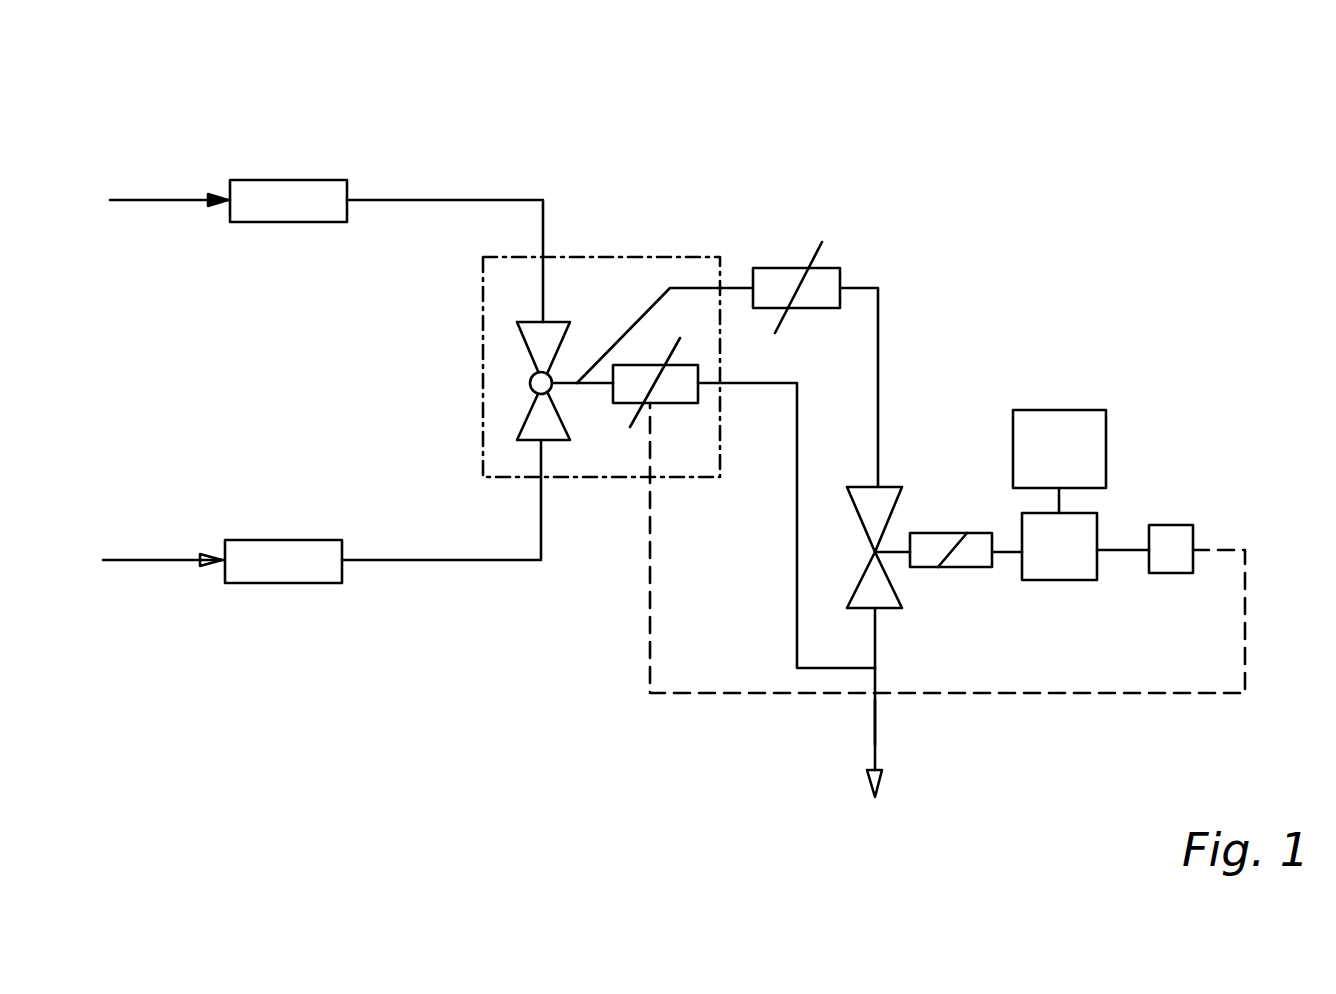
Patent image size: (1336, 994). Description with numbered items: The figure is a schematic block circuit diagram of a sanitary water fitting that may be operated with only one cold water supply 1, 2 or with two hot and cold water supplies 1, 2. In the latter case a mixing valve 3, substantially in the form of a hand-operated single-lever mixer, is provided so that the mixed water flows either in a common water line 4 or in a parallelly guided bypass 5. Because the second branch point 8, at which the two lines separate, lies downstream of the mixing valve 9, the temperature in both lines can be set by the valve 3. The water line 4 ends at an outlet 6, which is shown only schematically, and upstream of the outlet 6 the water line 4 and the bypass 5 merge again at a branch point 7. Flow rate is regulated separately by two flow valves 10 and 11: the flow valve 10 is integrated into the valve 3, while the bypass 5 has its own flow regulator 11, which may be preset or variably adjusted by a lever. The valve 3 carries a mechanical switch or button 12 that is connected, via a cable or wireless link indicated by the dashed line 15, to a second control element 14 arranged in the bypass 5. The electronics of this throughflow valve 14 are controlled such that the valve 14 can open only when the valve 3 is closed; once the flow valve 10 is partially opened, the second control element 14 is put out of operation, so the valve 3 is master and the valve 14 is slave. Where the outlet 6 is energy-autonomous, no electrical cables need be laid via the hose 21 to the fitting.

The water supply 1 is at (166, 200).
The water supply 2 is at (170, 560).
The mixing valve 3 is at (635, 257).
The water line 4 is at (797, 530).
The bypass 5 is at (878, 357).
The outlet 6 is at (860, 725).
The branch point 7 is at (884, 664).
The second branch point 8 is at (579, 390).
The mixing valve 9 is at (530, 383).
The flow valve 10 is at (651, 356).
The flow valve 11 is at (785, 264).
The mechanical switch/button 12 is at (1170, 525).
The second control element 14 is at (950, 533).
The dashed line 15 is at (1110, 700).
The hose 21 is at (873, 745).